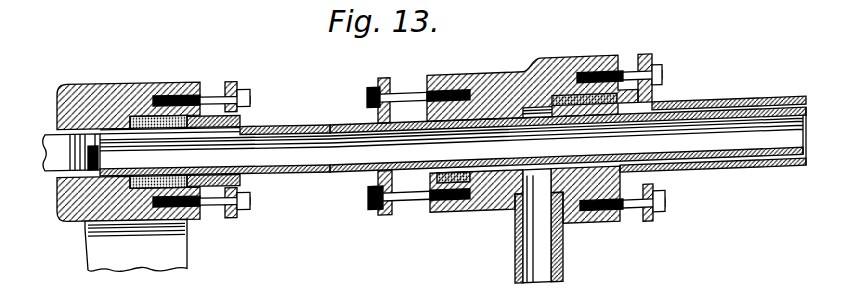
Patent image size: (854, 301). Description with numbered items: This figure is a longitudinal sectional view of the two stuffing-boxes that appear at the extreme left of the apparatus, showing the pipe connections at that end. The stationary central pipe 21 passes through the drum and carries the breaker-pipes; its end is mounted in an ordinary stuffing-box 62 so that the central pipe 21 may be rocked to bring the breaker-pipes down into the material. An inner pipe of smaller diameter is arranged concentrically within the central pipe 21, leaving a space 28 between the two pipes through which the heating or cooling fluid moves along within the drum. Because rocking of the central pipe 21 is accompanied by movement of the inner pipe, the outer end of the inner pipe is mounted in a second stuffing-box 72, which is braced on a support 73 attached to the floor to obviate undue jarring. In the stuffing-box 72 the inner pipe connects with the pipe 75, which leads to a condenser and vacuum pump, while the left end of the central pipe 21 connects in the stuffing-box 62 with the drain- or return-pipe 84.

The central pipe 21 is at (706, 108).
The space 28 is at (762, 124).
The stuffing-box 62 is at (543, 74).
The stuffing-box 72 is at (126, 80).
The support 73 is at (172, 258).
The pipe 75 is at (56, 135).
The drain- or return-pipe 84 is at (551, 266).